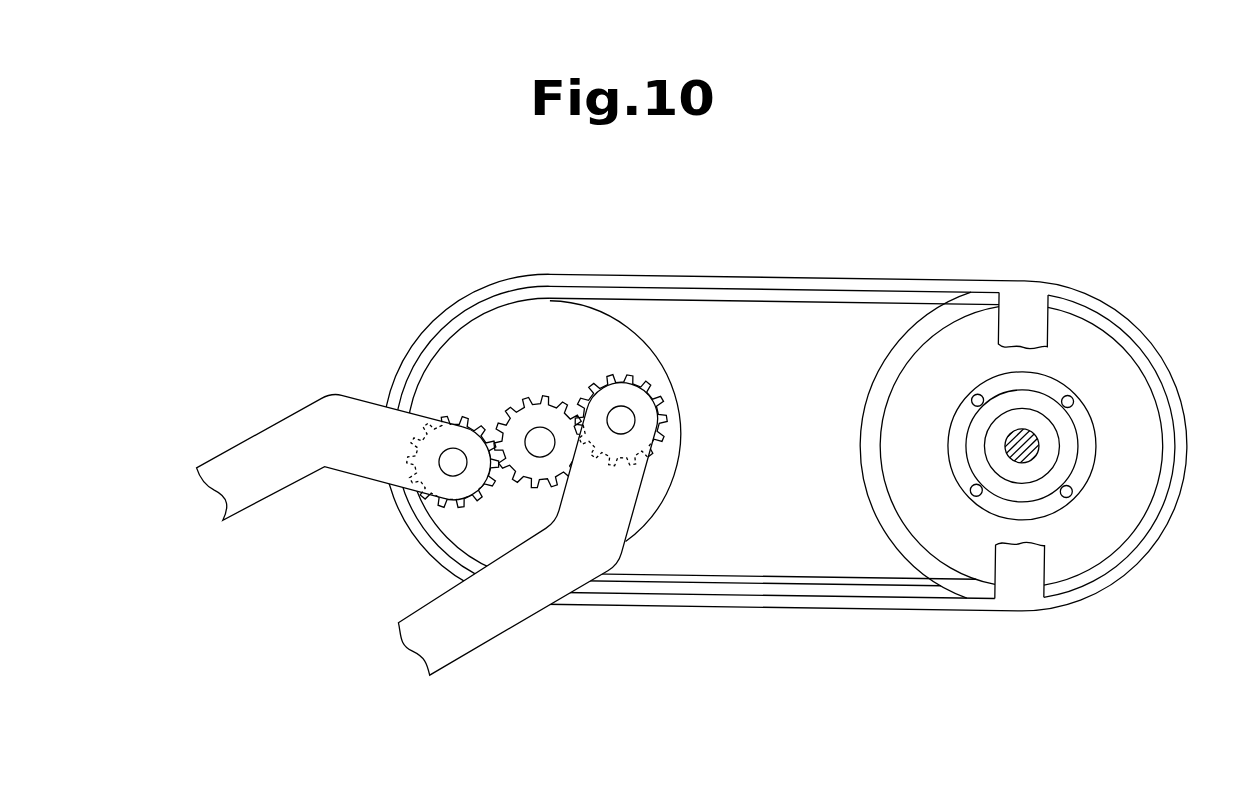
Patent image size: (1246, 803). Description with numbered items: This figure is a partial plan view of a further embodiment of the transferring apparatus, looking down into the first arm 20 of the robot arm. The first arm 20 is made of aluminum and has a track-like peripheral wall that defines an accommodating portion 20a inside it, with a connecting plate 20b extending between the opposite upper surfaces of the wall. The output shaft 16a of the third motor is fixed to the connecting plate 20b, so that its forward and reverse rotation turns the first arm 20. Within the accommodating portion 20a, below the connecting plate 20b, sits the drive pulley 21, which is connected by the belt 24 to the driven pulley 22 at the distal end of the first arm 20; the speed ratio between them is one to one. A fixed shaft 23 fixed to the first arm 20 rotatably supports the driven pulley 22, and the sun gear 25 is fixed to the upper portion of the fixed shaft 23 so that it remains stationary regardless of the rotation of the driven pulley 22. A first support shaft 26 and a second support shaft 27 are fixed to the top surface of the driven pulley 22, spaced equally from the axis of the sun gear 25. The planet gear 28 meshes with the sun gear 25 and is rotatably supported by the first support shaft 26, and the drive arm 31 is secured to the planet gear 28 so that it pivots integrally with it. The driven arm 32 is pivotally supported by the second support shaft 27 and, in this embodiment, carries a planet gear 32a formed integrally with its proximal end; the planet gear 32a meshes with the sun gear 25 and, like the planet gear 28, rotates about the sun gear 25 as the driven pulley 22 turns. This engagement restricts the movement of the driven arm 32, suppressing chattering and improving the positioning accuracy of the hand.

The output shaft 16a is at (1035, 452).
The first arm 20 is at (837, 600).
The accommodating portion 20a is at (790, 465).
The connecting plate 20b is at (986, 559).
The drive pulley 21 is at (1157, 445).
The driven pulley 22 is at (453, 338).
The fixed shaft 23 is at (545, 438).
The belt 24 is at (780, 302).
The sun gear 25 is at (515, 404).
The first support shaft 26 is at (440, 465).
The second support shaft 27 is at (634, 416).
The planet gear 28 is at (479, 509).
The drive arm 31 is at (251, 507).
The driven arm 32 is at (503, 634).
The planet gear 32a is at (644, 372).